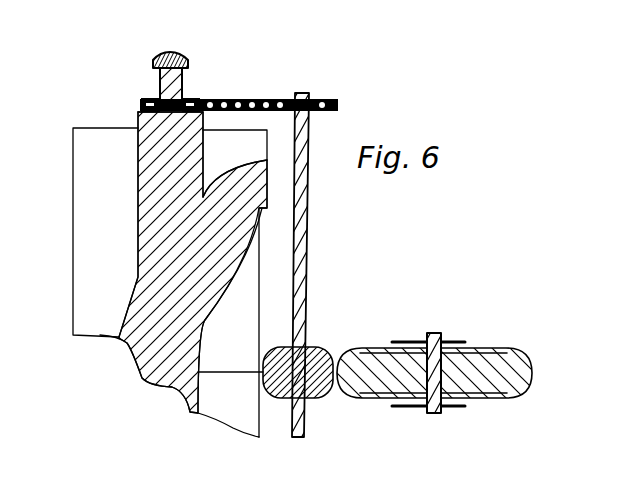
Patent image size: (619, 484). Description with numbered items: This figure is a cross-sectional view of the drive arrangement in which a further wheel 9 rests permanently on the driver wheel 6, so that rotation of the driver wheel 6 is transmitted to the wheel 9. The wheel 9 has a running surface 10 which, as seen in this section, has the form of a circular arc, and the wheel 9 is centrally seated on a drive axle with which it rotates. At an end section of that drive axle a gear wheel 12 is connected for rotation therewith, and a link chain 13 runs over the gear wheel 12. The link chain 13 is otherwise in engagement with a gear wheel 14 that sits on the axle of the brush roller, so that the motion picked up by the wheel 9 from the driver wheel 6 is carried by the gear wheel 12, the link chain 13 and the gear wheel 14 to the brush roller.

The driver wheel 6 is at (498, 373).
The wheel 9 is at (312, 355).
The running surface 10 is at (301, 243).
The gear wheel 12 is at (318, 98).
The link chain 13 is at (242, 97).
The gear wheel 14 is at (190, 97).